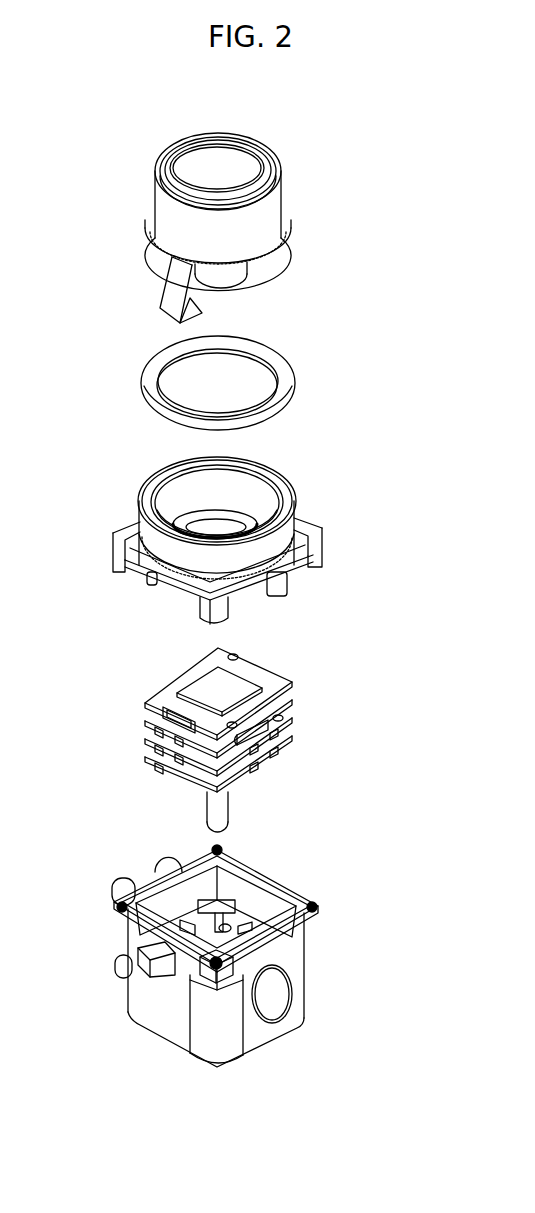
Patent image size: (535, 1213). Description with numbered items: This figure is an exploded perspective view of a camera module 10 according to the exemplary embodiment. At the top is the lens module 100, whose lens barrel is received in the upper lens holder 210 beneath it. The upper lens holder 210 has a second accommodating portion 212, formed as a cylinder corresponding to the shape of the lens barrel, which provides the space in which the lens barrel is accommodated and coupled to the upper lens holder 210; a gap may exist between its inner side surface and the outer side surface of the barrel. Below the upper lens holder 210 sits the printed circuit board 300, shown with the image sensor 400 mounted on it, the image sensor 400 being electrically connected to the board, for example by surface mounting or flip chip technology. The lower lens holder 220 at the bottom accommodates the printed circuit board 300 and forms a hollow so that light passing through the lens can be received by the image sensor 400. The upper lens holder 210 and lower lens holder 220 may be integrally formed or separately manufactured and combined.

The camera module 10 is at (58, 120).
The lens module 100 is at (283, 192).
The upper lens holder 210 is at (241, 530).
The second accommodating portion 212 is at (198, 486).
The lower lens holder 220 is at (307, 963).
The printed circuit board 300 is at (289, 729).
The image sensor 400 is at (218, 687).